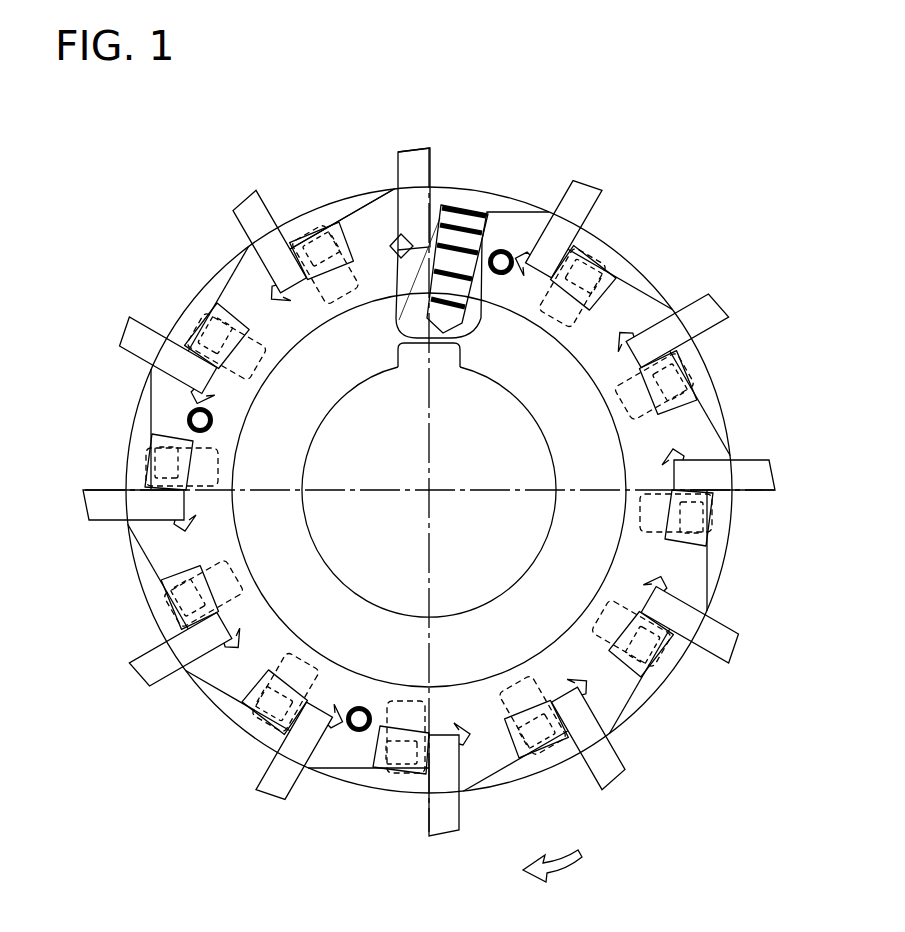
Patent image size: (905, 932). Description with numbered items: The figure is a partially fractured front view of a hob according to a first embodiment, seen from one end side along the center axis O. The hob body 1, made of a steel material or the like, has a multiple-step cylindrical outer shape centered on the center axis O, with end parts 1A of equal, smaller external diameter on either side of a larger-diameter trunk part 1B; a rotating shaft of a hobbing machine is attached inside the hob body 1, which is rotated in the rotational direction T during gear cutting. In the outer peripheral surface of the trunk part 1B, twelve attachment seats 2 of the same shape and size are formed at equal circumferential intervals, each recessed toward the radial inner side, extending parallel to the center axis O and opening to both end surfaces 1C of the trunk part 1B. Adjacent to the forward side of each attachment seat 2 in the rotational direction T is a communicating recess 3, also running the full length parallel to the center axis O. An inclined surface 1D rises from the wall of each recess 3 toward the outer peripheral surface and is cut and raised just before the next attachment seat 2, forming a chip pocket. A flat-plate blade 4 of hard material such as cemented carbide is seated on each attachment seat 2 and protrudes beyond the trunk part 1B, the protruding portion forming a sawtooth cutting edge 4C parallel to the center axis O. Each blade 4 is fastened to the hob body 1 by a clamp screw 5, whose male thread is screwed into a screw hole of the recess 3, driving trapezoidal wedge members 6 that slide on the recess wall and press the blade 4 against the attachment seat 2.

The hob body 1 is at (182, 243).
The end parts 1A is at (298, 432).
The trunk part 1B is at (180, 318).
The end surfaces 1C is at (247, 290).
The inclined surface 1D is at (383, 204).
The attachment seat 2 is at (398, 238).
The recess 3 is at (503, 224).
The blade 4 is at (404, 130).
The cutting edge 4C is at (432, 160).
The clamp screw 5 is at (470, 210).
The wedge members 6 is at (441, 206).
The center axis O is at (431, 492).
The rotational direction T is at (552, 880).